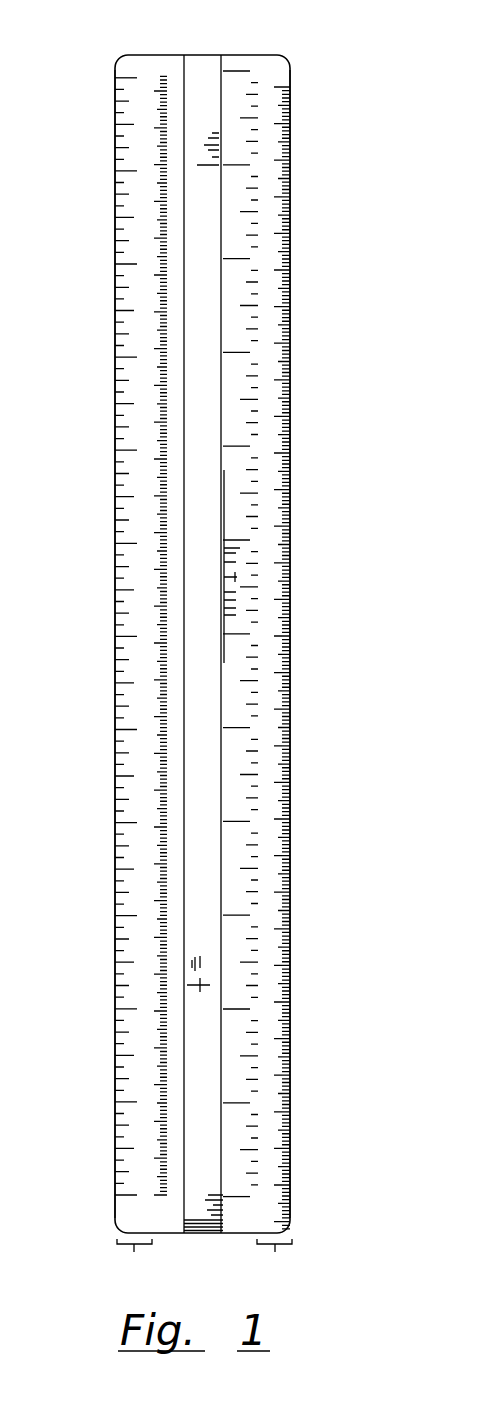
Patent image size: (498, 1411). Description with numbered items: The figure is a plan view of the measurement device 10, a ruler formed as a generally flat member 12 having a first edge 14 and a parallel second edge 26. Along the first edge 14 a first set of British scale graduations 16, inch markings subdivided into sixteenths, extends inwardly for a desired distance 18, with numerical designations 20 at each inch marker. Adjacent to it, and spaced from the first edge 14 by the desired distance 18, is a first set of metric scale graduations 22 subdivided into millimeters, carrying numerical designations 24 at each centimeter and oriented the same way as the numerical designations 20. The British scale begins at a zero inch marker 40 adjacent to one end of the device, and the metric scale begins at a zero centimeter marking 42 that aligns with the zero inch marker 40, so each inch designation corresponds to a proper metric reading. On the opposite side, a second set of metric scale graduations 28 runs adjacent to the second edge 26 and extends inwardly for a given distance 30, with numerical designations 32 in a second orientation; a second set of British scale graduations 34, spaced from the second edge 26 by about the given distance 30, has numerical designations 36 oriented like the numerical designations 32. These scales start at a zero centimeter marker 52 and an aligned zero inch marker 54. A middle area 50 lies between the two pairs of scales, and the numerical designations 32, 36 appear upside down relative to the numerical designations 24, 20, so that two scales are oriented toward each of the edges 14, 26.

The measurement device 10 is at (368, 286).
The flat member 12 is at (110, 834).
The first edge 14 is at (115, 665).
The first set of British scale graduations 16 is at (146, 1104).
The desired distance 18 is at (134, 1263).
The numerical designations 20 is at (137, 453).
The first set of metric scale graduations 22 is at (162, 585).
The numerical designations 24 is at (158, 382).
The second edge 26 is at (290, 978).
The second set of metric scale graduations 28 is at (290, 797).
The given distance 30 is at (274, 1263).
The numerical designations 32 is at (290, 872).
The second set of British scale graduations 34 is at (240, 493).
The numerical designations 36 is at (227, 443).
The zero inch marker 40 is at (138, 1196).
The zero centimeter marking 42 is at (167, 1198).
The middle area 50 is at (205, 70).
The zero centimeter marker 52 is at (279, 71).
The zero inch marker 54 is at (237, 73).